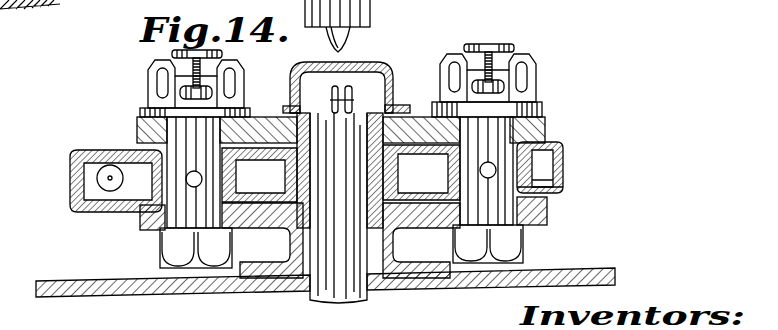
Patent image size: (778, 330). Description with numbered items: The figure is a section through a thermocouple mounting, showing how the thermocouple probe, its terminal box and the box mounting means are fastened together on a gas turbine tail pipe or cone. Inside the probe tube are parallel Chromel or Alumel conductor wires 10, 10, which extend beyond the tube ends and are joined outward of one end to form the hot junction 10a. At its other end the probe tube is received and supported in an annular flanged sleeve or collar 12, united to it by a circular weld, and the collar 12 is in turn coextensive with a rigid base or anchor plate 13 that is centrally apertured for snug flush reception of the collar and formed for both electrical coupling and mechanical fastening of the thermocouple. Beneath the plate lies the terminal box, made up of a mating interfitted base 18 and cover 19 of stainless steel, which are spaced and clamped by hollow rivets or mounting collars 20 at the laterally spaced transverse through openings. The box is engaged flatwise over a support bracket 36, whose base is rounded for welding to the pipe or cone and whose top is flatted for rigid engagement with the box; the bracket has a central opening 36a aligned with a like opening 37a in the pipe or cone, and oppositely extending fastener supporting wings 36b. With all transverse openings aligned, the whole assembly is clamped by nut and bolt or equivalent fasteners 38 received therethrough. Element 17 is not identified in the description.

The conductor wires 10 is at (348, 106).
The hot junction 10a is at (353, 38).
The annular flanged sleeve or collar 12 is at (309, 113).
The base or anchor plate 13 is at (257, 117).
The cap 17 is at (386, 86).
The base element 18 is at (558, 194).
The cover element 19 is at (565, 155).
The hollow rivets or mounting collars 20 is at (289, 173).
The support bracket 36 is at (290, 245).
The central opening 36a is at (388, 280).
The fastener supporting wings 36b is at (140, 215).
The opening in pipe or cone 37a is at (308, 290).
The nut and bolt fasteners 38 is at (150, 82).